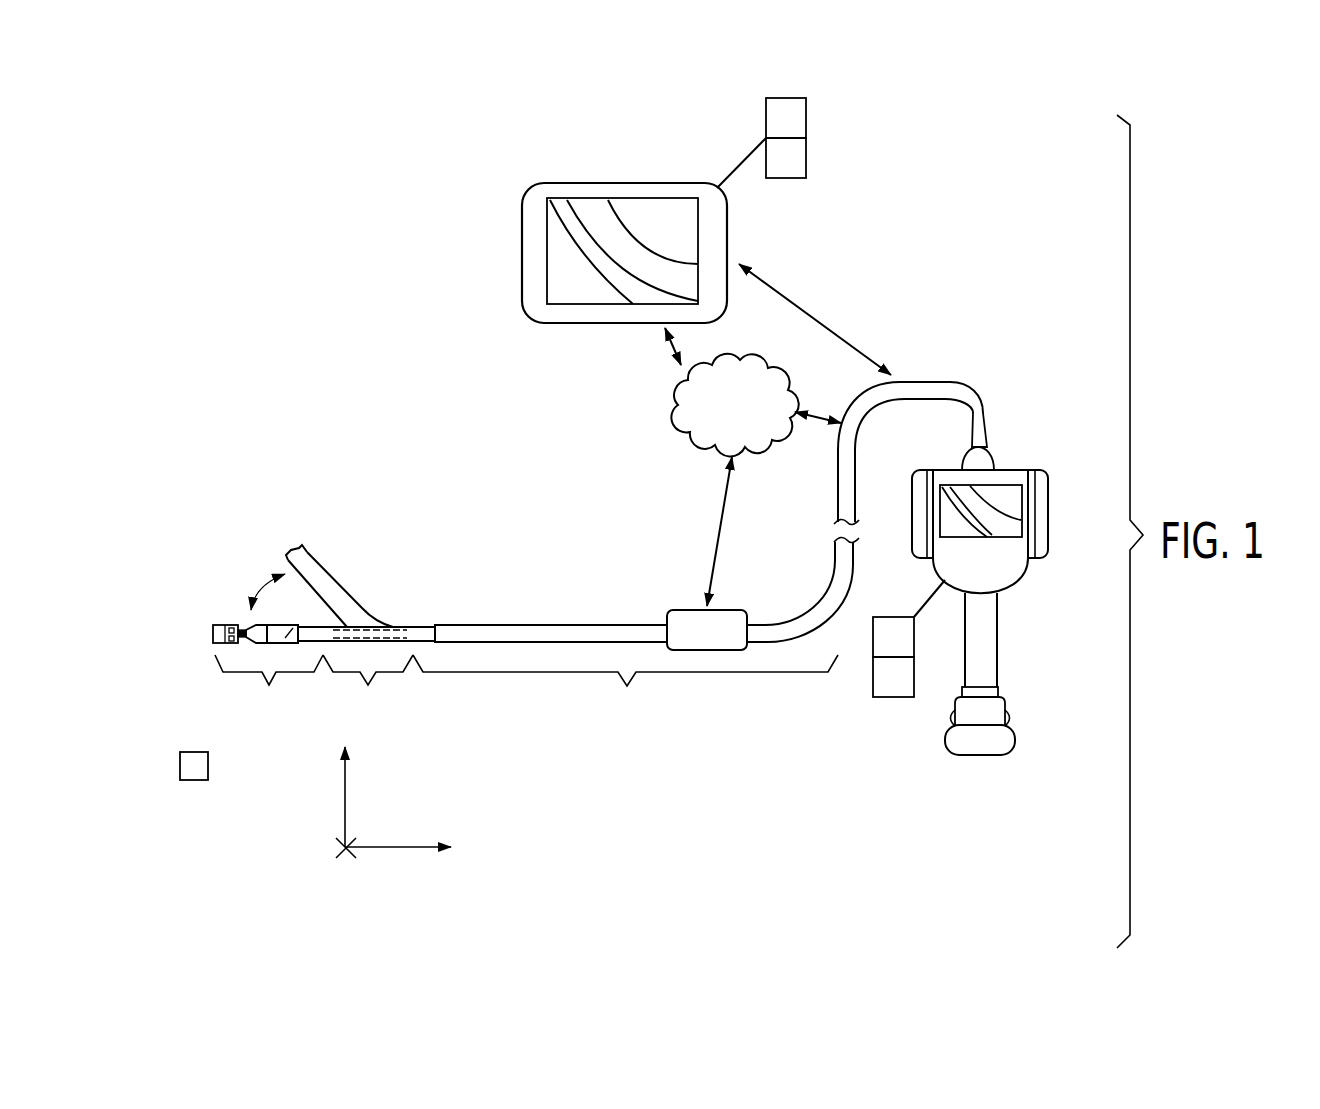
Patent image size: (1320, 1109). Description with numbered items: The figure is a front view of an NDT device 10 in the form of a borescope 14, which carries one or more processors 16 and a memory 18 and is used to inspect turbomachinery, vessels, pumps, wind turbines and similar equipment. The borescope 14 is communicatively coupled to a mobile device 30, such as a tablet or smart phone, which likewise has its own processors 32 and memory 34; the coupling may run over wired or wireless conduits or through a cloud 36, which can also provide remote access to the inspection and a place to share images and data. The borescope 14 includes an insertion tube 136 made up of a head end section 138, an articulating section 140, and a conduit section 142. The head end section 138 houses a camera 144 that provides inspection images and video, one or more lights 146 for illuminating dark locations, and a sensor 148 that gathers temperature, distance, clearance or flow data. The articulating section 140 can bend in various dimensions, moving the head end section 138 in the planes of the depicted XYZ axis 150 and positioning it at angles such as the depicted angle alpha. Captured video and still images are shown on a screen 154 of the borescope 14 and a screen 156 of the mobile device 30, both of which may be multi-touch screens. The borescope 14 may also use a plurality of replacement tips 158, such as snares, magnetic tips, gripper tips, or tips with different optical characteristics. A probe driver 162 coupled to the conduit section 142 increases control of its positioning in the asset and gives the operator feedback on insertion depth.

The NDT device 10 is at (941, 127).
The borescope 14 is at (1012, 750).
The processors 16 is at (893, 617).
The memory 18 is at (873, 678).
The mobile device 30 is at (622, 183).
The processors 32 is at (806, 114).
The memory 34 is at (806, 154).
The cloud 36 is at (700, 440).
The insertion tube 136 is at (339, 511).
The head end section 138 is at (269, 688).
The articulating section 140 is at (368, 688).
The conduit section 142 is at (625, 688).
The camera 144 is at (243, 625).
The lights 146 is at (230, 626).
The sensor 148 is at (295, 628).
The XYZ axis 150 is at (372, 858).
The screen 154 is at (1030, 520).
The screen 156 is at (712, 248).
The replacement tips 158 is at (192, 780).
The probe driver 162 is at (690, 610).